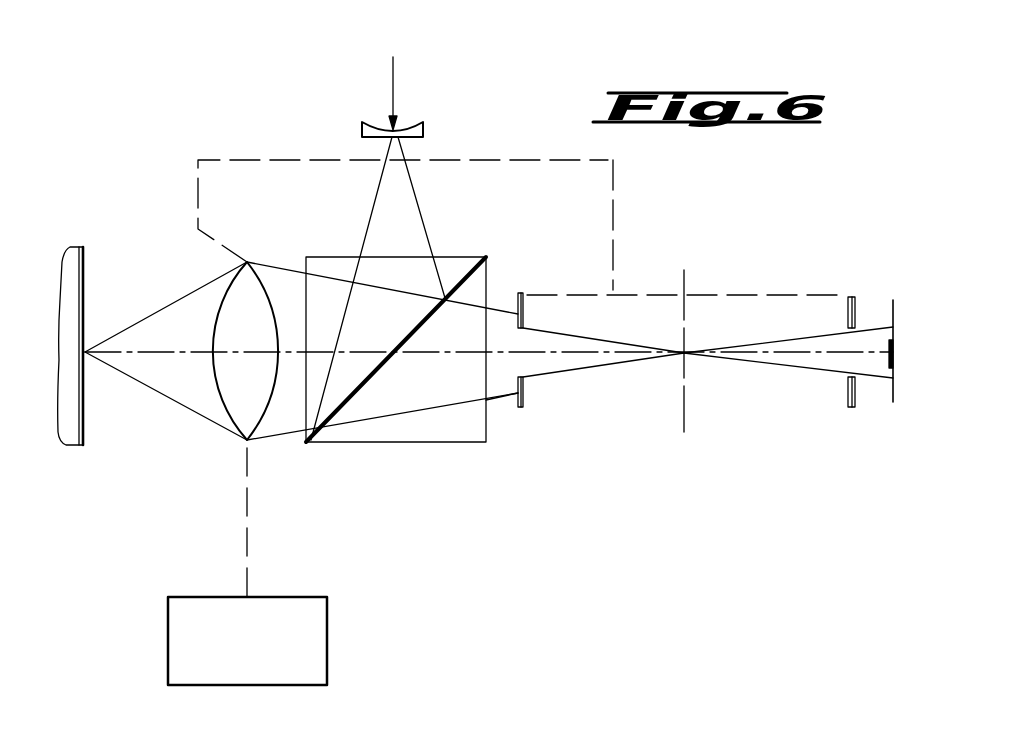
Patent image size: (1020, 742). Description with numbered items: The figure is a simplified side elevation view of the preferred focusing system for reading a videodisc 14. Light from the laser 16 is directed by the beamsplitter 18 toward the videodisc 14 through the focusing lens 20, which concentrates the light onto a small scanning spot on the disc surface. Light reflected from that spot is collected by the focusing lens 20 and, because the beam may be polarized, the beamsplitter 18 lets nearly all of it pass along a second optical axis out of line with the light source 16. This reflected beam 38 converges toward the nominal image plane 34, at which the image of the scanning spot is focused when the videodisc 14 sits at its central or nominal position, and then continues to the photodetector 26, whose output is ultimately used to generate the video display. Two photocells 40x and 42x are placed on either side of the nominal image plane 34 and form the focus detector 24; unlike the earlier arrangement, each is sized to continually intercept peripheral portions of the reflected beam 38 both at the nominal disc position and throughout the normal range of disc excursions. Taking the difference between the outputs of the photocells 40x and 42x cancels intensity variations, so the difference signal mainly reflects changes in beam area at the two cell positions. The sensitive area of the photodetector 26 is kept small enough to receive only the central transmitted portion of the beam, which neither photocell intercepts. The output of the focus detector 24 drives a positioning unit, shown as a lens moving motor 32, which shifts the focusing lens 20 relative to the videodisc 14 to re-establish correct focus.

The videodisc 14 is at (85, 258).
The laser 16 is at (417, 222).
The beamsplitter 18 is at (453, 255).
The focusing lens 20 is at (250, 262).
The focus detector 24 is at (712, 297).
The photodetector 26 is at (890, 395).
The positioning unit 32 is at (305, 600).
The nominal image plane 34 is at (686, 418).
The reflected beam 38 is at (497, 388).
The photocell 40x is at (523, 400).
The photocell 42x is at (848, 395).